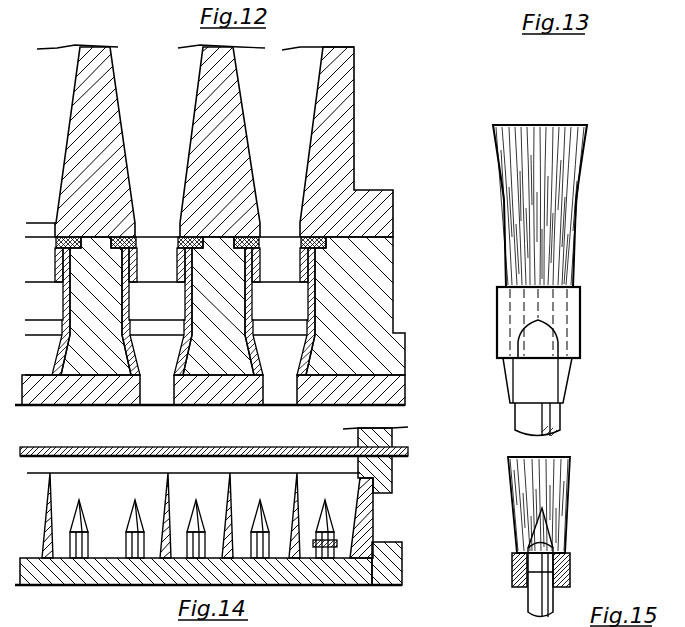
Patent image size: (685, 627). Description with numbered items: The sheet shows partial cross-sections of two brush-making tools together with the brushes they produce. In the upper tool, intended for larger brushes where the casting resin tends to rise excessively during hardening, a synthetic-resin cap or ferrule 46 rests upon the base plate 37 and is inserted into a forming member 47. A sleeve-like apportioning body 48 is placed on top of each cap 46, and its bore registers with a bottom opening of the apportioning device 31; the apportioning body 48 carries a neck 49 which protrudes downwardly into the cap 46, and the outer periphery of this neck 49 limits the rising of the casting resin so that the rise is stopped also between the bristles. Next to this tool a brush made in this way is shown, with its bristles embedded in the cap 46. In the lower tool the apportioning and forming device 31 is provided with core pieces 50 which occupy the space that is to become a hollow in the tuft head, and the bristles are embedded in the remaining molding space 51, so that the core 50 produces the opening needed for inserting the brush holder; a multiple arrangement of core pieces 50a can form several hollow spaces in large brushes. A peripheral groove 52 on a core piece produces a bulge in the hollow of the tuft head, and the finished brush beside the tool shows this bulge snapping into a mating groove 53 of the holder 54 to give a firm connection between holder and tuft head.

In FIG. 12, the apportioning device 31 is at (346, 116).
In FIG. 14, the apportioning device 31 is at (372, 525).
In FIG. 12, the base plate 37 is at (392, 400).
In FIG. 14, the base plate 37 is at (403, 572).
In FIG. 12, the cap or ferrule 46 is at (310, 313).
In FIG. 13, the cap or ferrule 46 is at (502, 312).
In FIG. 12, the forming member 47 is at (380, 283).
In FIG. 12, the apportioning body 48 is at (325, 243).
In FIG. 12, the neck 49 is at (305, 272).
In FIG. 14, the core piece 50 is at (326, 505).
In FIG. 14, the core pieces 50a is at (133, 517).
In FIG. 14, the molding space 51 is at (343, 550).
In FIG. 14, the peripheral groove 52 is at (317, 543).
In FIG. 15, the mating groove 53 is at (527, 572).
In FIG. 15, the holder 54 is at (538, 598).